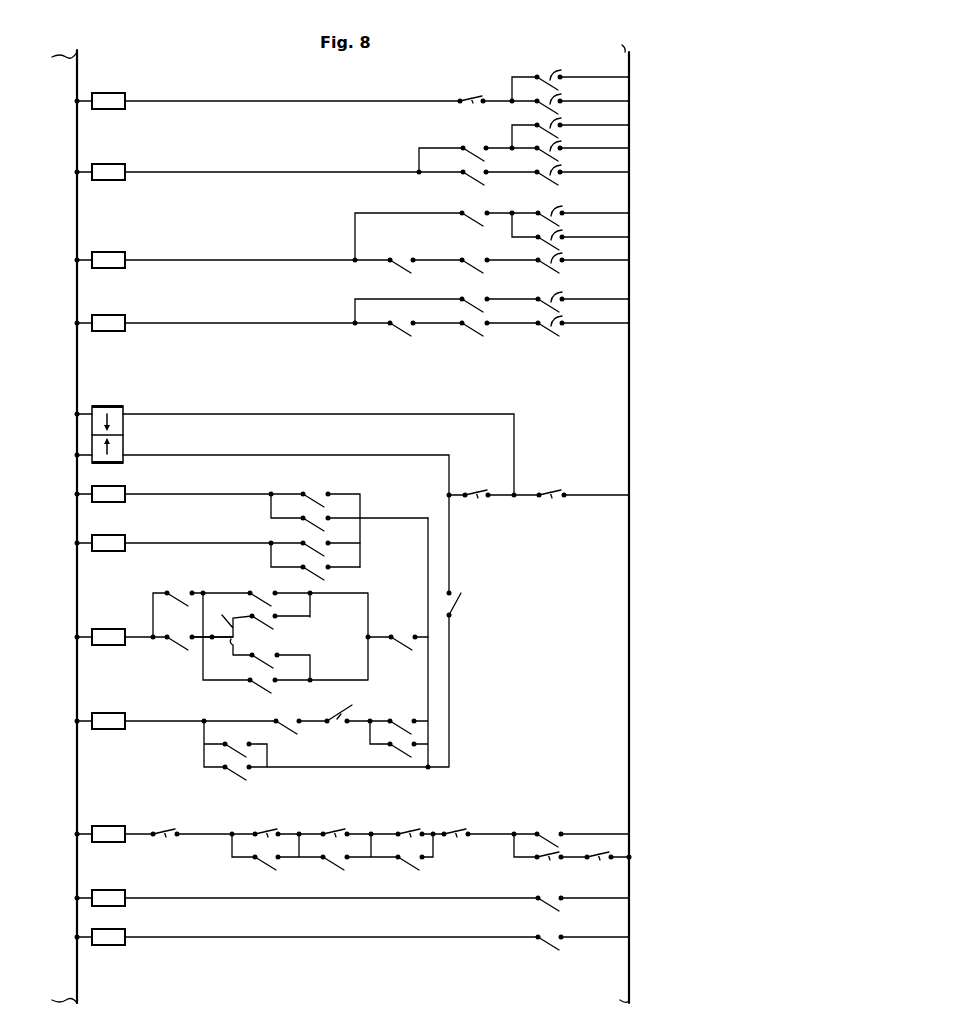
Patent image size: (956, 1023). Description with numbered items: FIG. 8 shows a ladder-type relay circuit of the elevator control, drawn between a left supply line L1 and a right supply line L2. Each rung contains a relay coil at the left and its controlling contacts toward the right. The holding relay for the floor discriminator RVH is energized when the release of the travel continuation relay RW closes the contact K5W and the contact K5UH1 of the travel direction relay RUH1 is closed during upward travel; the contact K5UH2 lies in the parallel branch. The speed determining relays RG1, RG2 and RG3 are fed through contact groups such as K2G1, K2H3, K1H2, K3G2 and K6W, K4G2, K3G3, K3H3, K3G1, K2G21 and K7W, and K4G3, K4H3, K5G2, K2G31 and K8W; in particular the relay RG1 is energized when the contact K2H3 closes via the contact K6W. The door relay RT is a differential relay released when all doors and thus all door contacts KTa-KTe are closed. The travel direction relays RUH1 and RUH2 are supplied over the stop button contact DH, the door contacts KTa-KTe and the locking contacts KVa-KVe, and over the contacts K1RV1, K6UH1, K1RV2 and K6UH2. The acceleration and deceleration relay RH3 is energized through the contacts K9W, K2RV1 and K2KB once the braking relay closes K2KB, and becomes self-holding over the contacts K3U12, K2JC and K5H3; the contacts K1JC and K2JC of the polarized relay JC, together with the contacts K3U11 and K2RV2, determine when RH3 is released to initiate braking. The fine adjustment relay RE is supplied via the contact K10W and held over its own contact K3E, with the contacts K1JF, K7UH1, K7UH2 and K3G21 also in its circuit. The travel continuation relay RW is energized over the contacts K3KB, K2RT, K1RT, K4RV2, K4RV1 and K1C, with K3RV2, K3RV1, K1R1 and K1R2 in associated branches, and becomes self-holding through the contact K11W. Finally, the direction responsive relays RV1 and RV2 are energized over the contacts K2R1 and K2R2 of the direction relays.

The supply line L1 is at (53, 529).
The supply line L2 is at (613, 522).
The holding relay for floor discriminator RVH is at (237, 101).
The speed determining relay RG1 is at (238, 172).
The speed determining relay RG2 is at (202, 260).
The speed determining relay RG3 is at (202, 323).
The door relay RT is at (265, 499).
The travel direction responsive relay for downward travel RUH1 is at (221, 526).
The travel direction responsive relay for upward travel RUH2 is at (187, 550).
The acceleration and deceleration relay RH3 is at (221, 637).
The fine adjustment relay RE is at (231, 644).
The travel continuation relay RW is at (323, 842).
The travel direction responsive relay for downward travel RV1 is at (321, 898).
The travel direction responsive relay for upward travel RV2 is at (321, 937).
The contact of relay RW K5W is at (494, 90).
The contact of relay RUH1 K5UH1 is at (582, 74).
The contact of relay RUH2 K5UH2 is at (582, 98).
The contact of relay RG1 K2G1 is at (477, 150).
The contact of relay RH3 K2H3 is at (480, 169).
The contact of relay RH2 K1H2 is at (582, 122).
The contact of relay RG2 K3G2 is at (582, 145).
The contact of relay RW K6W is at (582, 169).
The contact of relay RG2 K4G2 is at (446, 229).
The contact of relay RG3 K3G3 is at (583, 210).
The contact of relay RH3 K3H3 is at (583, 234).
The contact of relay RG1 K3G1 is at (409, 257).
The contact of relay RG21 K2G21 is at (477, 257).
The contact of relay RW K7W is at (583, 257).
The contact of relay RG3 K4G3 is at (446, 303).
The contact of relay RH3 K4H3 is at (583, 296).
The contact of relay RG2 K5G2 is at (409, 320).
The contact of relay RG31 K2G31 is at (477, 320).
The contact of relay RW K8W is at (583, 320).
The contact of relay RV1 K1RV1 is at (318, 490).
The contact of relay RUH1 K6UH1 is at (304, 520).
The contact of relay RV2 K1RV2 is at (307, 548).
The contact of relay RUH2 K6UH2 is at (302, 576).
The door contacts KTa-KTe is at (485, 505).
The contact of the stop button DH is at (550, 484).
The locking contacts KVa-KVe is at (452, 604).
The contact of relay RW K9W is at (173, 589).
The contact of relay RV1 K2RV1 is at (270, 593).
The contact of relay RH3 K5H3 is at (178, 633).
The selector switch JC is at (212, 637).
The contact of polarized relay RJC K1JC is at (243, 613).
The contact of polarized relay RJC K2JC is at (244, 667).
The contact of relay RU11 K3U11 is at (268, 626).
The contact of relay RU12 K3U12 is at (266, 654).
The contact of relay RV2 K2RV2 is at (270, 690).
The contact of braking relay RKB K2KB is at (398, 633).
The contact of relay RE K3E is at (288, 721).
The contact of relay RJF K1JF is at (335, 724).
The contact of relay RUH1 K7UH1 is at (402, 716).
The contact of relay RUH2 K7UH2 is at (400, 749).
The contact of relay RG21 K3G21 is at (237, 741).
The contact of relay RW K10W is at (246, 780).
The contact of collecting relay RC K1C is at (166, 825).
The contact of relay RV1 K4RV1 is at (263, 824).
The contact of relay RV2 K3RV2 is at (331, 824).
The contact of relay RV1 K3RV1 is at (406, 824).
The contact of door relay RT K1RT is at (465, 824).
The contact of relay RW K11W is at (546, 837).
The contact of direction relay RR1 K1R1 is at (268, 865).
The contact of direction relay RR2 K1R2 is at (336, 865).
The contact of relay RV2 K4RV2 is at (410, 865).
The contact of door relay RT K2RT is at (548, 863).
The contact of braking relay RKB K3KB is at (598, 862).
The contact of direction relay RR1 K2R1 is at (550, 906).
The contact of direction relay RR2 K2R2 is at (550, 945).